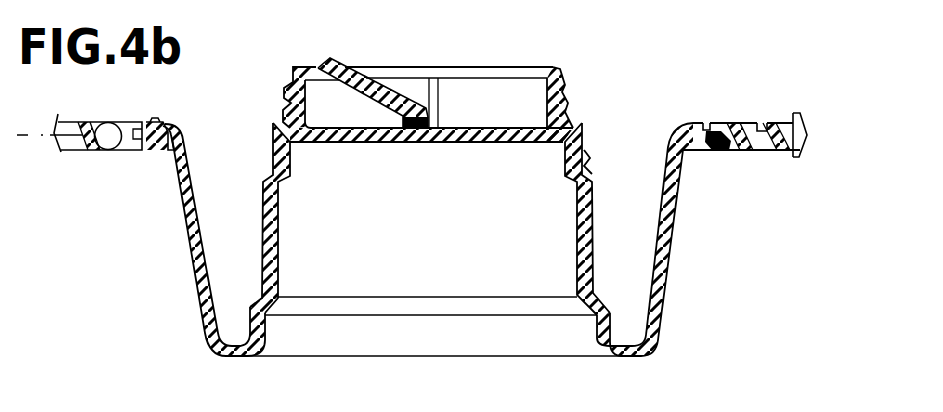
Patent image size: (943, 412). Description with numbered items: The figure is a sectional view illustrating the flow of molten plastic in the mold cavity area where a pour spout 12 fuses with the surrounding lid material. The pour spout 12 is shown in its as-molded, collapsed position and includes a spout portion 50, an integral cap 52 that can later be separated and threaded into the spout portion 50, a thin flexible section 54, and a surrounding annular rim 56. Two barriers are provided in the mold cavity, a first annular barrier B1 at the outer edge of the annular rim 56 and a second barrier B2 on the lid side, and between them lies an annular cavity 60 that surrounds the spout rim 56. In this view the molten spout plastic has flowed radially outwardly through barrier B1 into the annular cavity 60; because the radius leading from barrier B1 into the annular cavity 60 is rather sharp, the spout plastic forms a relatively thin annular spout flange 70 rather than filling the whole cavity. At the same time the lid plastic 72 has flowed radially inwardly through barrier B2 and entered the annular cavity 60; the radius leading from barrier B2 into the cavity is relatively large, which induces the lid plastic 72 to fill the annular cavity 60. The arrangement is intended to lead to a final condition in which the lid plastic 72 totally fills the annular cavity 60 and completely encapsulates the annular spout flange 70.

The pour spout 12 is at (590, 163).
The spout portion 50 is at (576, 228).
The integral cap 52 is at (565, 90).
The thin flexible section 54 is at (670, 253).
The annular rim 56 is at (704, 150).
The annular cavity 60 is at (733, 123).
The annular spout flange 70 is at (712, 146).
The lid plastic 72 is at (793, 148).
The first annular barrier B1 is at (707, 122).
The second barrier B2 is at (766, 122).